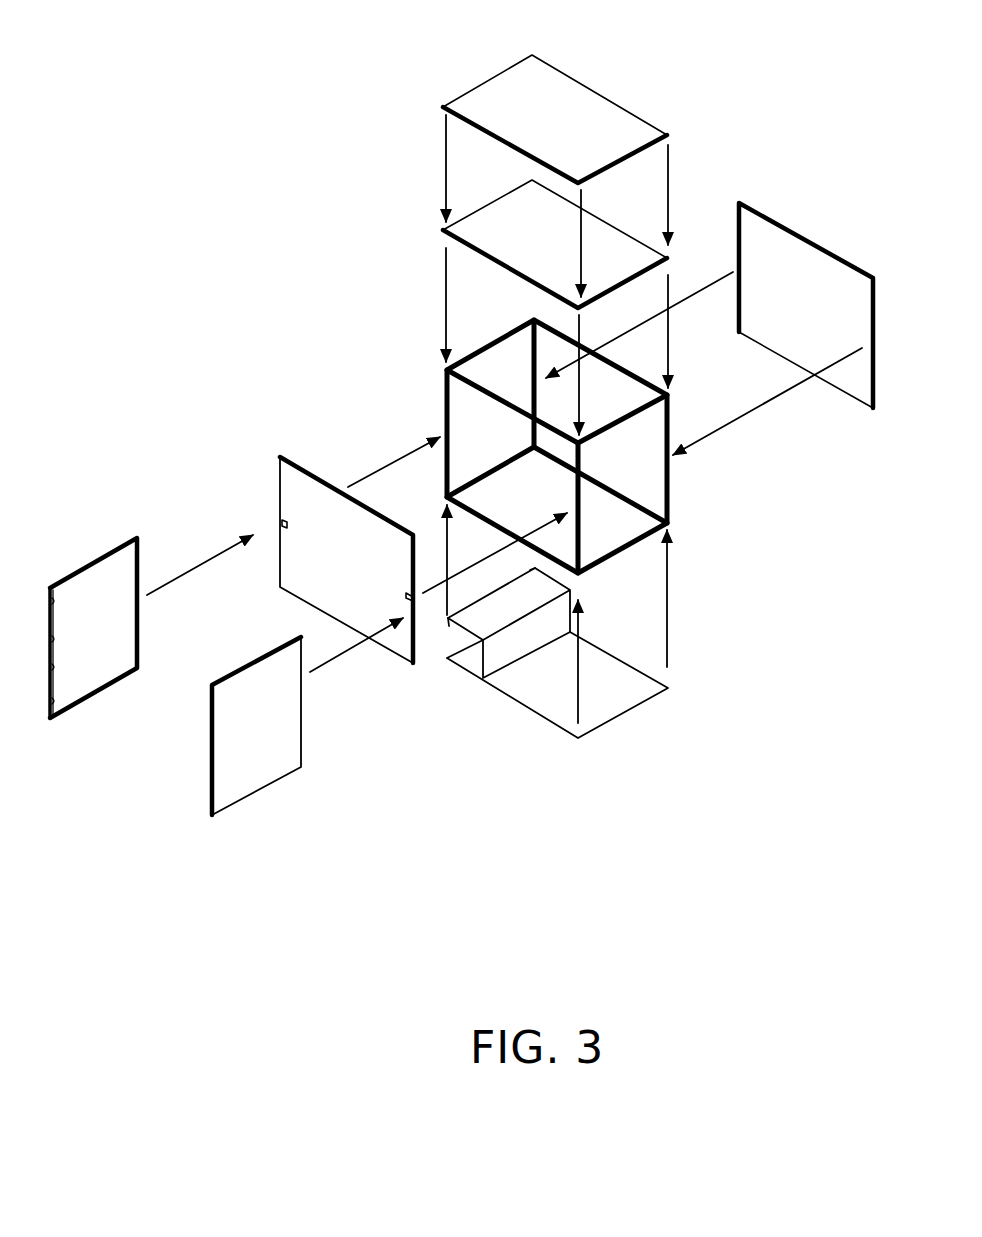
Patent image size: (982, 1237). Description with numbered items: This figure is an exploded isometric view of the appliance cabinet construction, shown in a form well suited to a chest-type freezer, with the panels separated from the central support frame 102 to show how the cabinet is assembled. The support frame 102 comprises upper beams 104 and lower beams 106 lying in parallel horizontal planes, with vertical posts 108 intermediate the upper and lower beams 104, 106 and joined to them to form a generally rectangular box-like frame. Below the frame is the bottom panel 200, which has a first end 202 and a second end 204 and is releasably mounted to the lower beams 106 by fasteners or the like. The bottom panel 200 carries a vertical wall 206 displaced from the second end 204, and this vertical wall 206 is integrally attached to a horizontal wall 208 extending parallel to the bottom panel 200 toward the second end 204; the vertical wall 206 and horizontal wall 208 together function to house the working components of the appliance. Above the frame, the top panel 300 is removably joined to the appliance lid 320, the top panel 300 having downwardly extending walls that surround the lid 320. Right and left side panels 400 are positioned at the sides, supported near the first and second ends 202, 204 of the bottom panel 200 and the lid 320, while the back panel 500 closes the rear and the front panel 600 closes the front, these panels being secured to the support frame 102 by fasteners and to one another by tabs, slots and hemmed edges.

The support frame 102 is at (485, 418).
The upper beams 104 is at (546, 326).
The lower beams 106 is at (480, 480).
The vertical posts 108 is at (534, 440).
The bottom panel 200 is at (533, 691).
The first end 202 is at (622, 715).
The second end 204 is at (460, 652).
The vertical wall 206 is at (500, 660).
The horizontal wall 208 is at (528, 583).
The top panel 300 is at (580, 95).
The appliance lid 320 is at (625, 245).
The side panels 400 is at (110, 628).
The back panel 500 is at (313, 490).
The front panel 600 is at (803, 255).